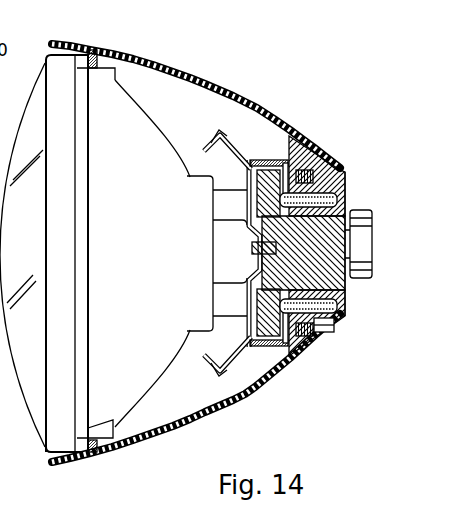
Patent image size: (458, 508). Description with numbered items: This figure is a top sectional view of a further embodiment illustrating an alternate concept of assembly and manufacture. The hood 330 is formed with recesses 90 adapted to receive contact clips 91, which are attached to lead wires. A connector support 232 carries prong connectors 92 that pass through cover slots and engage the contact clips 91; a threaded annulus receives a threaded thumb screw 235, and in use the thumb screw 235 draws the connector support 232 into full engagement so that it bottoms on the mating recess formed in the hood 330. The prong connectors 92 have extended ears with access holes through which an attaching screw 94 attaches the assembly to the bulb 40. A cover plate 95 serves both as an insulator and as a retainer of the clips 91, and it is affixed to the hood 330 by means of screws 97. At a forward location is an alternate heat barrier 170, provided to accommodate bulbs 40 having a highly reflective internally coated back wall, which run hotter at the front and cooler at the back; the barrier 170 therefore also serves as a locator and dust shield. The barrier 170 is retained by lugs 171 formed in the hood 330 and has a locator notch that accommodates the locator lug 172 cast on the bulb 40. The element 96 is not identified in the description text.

The hood 330 is at (177, 65).
The heat barrier 170 is at (98, 70).
The lugs 171 is at (134, 446).
The locator lug 172 is at (111, 430).
The bulb 40 is at (128, 149).
The connector support 232 is at (255, 245).
The recesses 90 is at (344, 181).
The contact clips 91 is at (343, 201).
The prong connectors 92 is at (266, 160).
The attaching screw 94 is at (240, 350).
The cover plate 95 is at (280, 368).
The spring 96 is at (304, 340).
The screws 97 is at (322, 334).
The thumb screw 235 is at (364, 245).